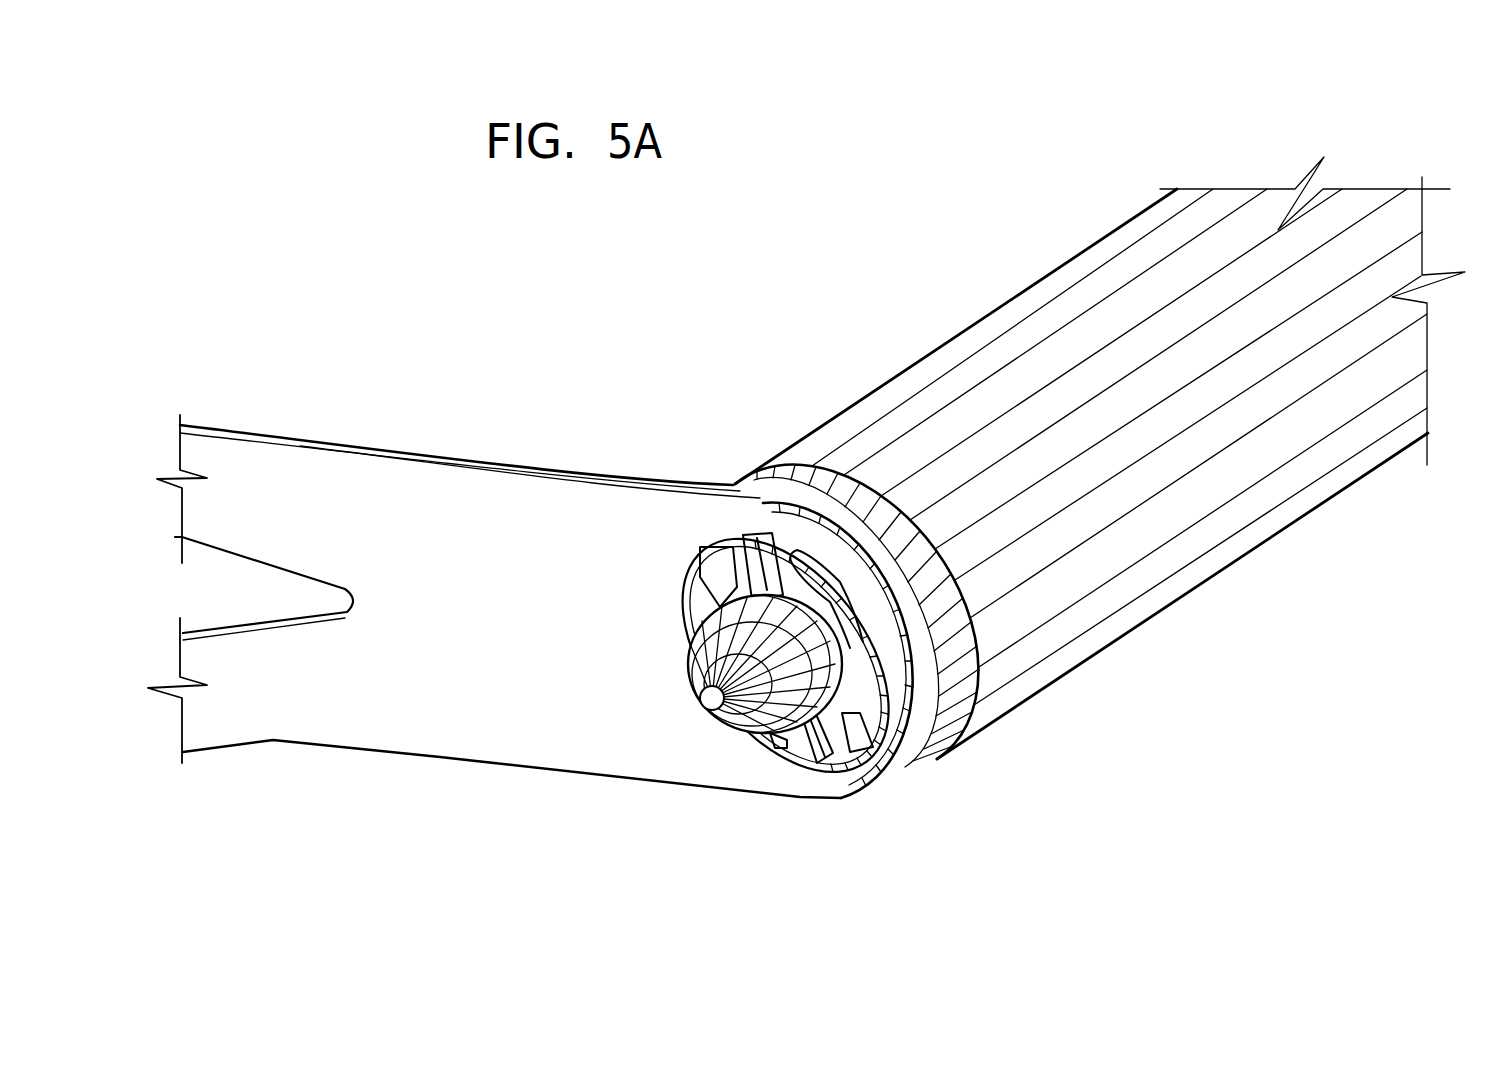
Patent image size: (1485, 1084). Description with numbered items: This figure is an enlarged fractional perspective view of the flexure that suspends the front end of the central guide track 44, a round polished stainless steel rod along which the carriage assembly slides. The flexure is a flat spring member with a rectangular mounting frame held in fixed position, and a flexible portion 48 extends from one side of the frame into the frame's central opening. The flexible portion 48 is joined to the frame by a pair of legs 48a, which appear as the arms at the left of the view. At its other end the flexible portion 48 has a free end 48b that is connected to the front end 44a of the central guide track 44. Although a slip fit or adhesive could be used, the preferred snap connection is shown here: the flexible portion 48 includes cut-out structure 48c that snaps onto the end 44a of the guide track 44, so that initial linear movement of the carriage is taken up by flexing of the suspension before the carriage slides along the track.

The central guide track 44 is at (1118, 548).
The front end of the central guide track 44a is at (803, 668).
The flexible portion 48 is at (426, 505).
The legs 48a is at (247, 487).
The free end 48b is at (652, 543).
The cut-out structure 48c is at (850, 697).